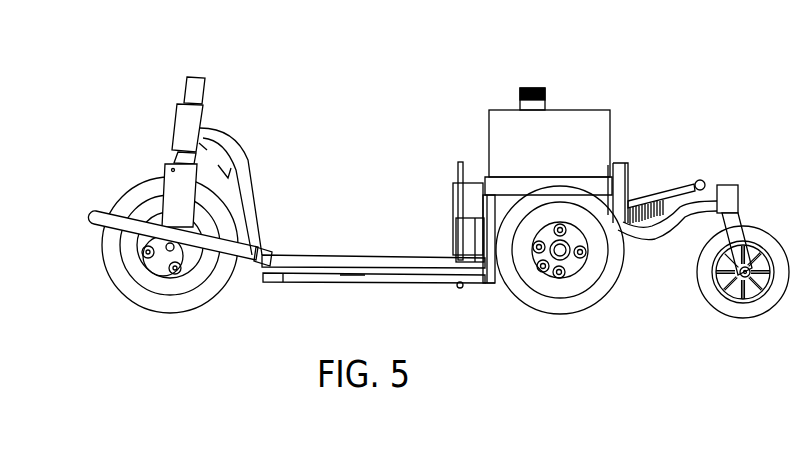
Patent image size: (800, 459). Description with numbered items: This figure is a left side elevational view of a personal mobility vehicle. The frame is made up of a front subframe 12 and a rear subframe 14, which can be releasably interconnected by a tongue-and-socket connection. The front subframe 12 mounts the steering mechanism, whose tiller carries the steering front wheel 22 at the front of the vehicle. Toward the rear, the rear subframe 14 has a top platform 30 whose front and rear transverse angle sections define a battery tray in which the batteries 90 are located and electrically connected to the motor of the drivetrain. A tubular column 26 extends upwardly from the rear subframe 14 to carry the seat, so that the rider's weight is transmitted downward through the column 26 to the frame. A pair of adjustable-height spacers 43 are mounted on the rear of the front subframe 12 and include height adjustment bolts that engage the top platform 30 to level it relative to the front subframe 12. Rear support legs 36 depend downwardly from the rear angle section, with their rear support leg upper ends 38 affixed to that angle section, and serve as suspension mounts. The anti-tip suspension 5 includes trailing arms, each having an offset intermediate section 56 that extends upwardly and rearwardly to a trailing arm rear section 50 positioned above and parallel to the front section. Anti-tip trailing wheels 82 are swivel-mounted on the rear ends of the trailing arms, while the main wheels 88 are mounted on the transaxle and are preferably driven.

The anti-tip suspension 5 is at (743, 183).
The front subframe 12 is at (264, 280).
The rear subframe 14 is at (450, 183).
The steering front wheel 22 is at (132, 187).
The tubular column 26 is at (532, 85).
The top platform 30 is at (507, 173).
The rear support legs 36 is at (636, 160).
The rear support leg upper ends 38 is at (622, 160).
The adjustable-height spacers 43 is at (478, 220).
The trailing arm rear section 50 is at (705, 193).
The offset intermediate section 56 is at (672, 226).
The anti-tip trailing wheels 82 is at (723, 315).
The main wheels 88 is at (521, 307).
The batteries 90 is at (497, 120).